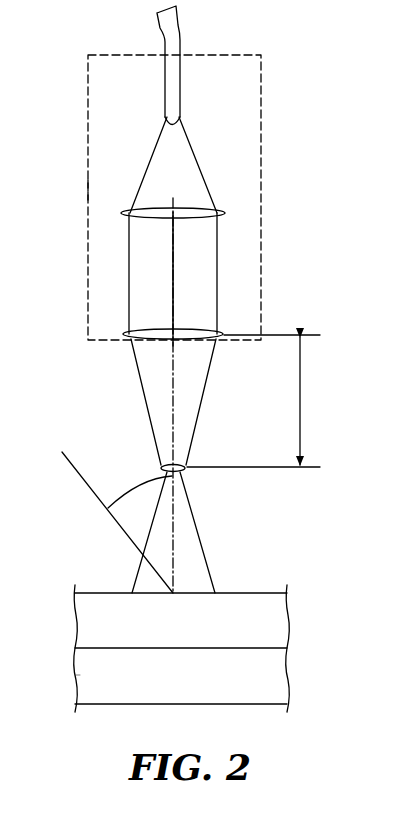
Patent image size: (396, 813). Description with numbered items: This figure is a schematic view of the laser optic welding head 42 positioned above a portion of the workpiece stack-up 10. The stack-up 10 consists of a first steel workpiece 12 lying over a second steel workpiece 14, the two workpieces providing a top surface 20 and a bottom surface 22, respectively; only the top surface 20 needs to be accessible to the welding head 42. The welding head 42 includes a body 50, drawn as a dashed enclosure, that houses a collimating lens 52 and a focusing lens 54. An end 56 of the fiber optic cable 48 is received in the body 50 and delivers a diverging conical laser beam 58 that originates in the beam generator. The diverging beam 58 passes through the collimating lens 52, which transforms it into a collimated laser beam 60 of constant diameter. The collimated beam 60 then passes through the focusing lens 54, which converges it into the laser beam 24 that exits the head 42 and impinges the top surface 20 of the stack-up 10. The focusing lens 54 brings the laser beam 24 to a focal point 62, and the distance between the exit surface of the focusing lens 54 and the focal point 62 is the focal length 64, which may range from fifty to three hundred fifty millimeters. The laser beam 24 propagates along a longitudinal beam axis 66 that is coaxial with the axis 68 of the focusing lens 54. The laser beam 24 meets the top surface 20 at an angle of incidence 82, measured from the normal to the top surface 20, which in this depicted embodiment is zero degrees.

The workpiece stack-up 10 is at (60, 640).
The first steel workpiece 12 is at (273, 620).
The second steel workpiece 14 is at (272, 675).
The top surface 20 is at (270, 592).
The bottom surface 22 is at (270, 705).
The laser beam 24 is at (187, 417).
The laser optic welding head 42 is at (277, 116).
The fiber optic cable 48 is at (181, 43).
The body 50 is at (262, 182).
The collimating lens 52 is at (148, 207).
The focusing lens 54 is at (152, 340).
The end of the fiber optic cable 56 is at (183, 128).
The diverging conical laser beam 58 is at (185, 168).
The collimated laser beam 60 is at (205, 277).
The focal point 62 is at (186, 474).
The focal length 64 is at (300, 418).
The longitudinal beam axis 66 is at (173, 398).
The axis of the focusing lens 68 is at (173, 272).
The angle of incidence 82 is at (138, 490).